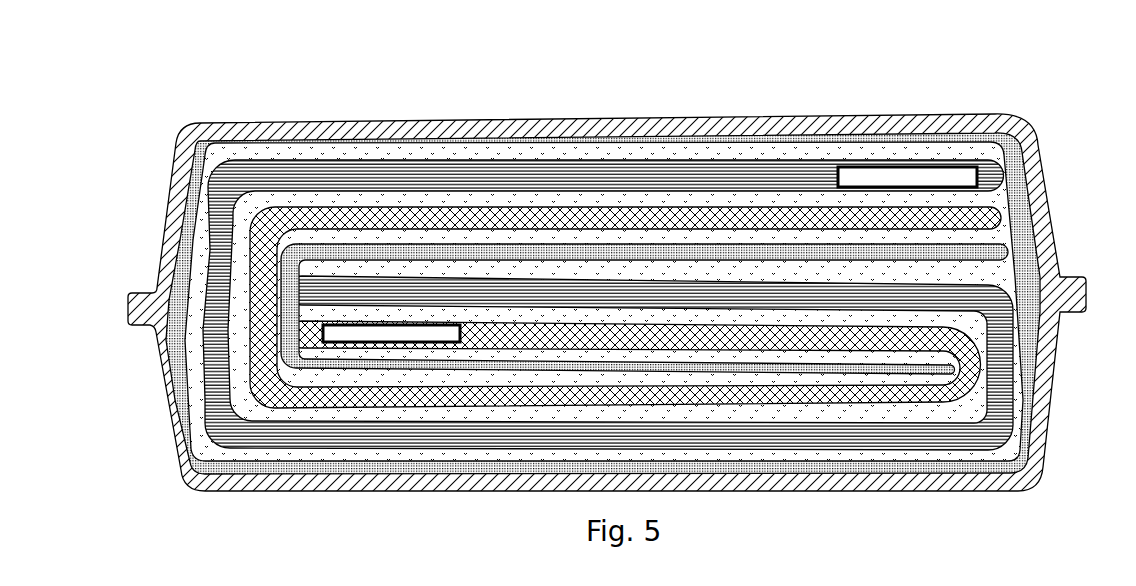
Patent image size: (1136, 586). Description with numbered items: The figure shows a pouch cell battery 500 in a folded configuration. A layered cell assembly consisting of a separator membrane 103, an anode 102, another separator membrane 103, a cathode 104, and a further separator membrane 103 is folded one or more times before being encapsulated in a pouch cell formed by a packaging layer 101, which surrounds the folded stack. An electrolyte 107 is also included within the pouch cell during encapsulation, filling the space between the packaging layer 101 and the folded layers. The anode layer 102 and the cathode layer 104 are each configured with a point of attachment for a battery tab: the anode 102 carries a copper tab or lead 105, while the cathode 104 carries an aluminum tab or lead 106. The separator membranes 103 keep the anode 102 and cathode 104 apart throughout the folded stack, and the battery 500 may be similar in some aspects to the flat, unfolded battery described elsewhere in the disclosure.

The pouch cell battery 500 is at (620, 253).
The packaging layer 101 is at (213, 132).
The anode 102 is at (980, 220).
The separator membrane 103 is at (817, 155).
The cathode 104 is at (500, 178).
The copper tab or lead 105 is at (365, 330).
The aluminum tab or lead 106 is at (890, 178).
The electrolyte 107 is at (1008, 183).